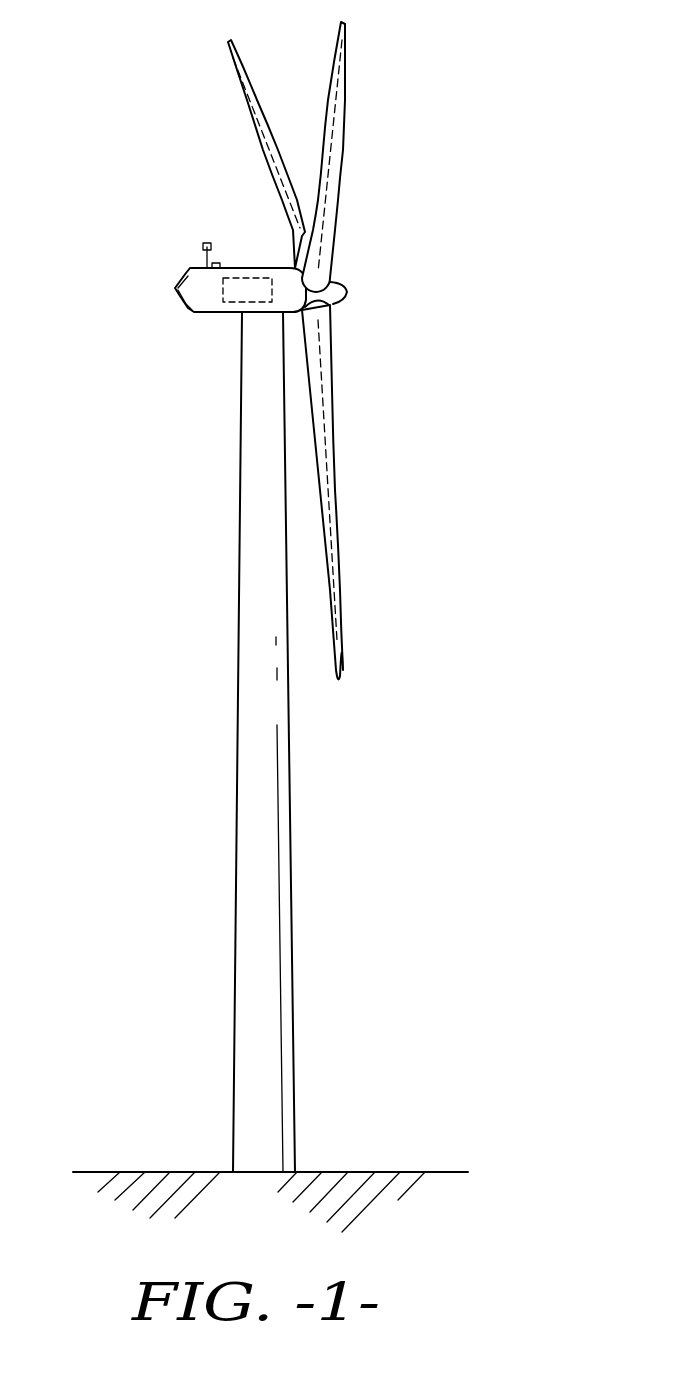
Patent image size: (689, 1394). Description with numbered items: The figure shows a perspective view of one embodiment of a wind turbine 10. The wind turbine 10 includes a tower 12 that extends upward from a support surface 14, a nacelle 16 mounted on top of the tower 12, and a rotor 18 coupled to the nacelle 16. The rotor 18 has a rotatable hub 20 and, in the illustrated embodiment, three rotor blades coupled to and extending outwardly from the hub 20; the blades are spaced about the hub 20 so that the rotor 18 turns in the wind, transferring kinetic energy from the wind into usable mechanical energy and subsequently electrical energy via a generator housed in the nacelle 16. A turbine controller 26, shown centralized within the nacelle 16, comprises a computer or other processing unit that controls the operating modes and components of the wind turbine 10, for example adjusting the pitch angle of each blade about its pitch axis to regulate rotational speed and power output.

The wind turbine 10 is at (445, 100).
The tower 12 is at (248, 860).
The support surface 14 is at (158, 1172).
The nacelle 16 is at (218, 315).
The rotor 18 is at (324, 339).
The rotatable hub 20 is at (342, 290).
The turbine controller 26 is at (248, 278).